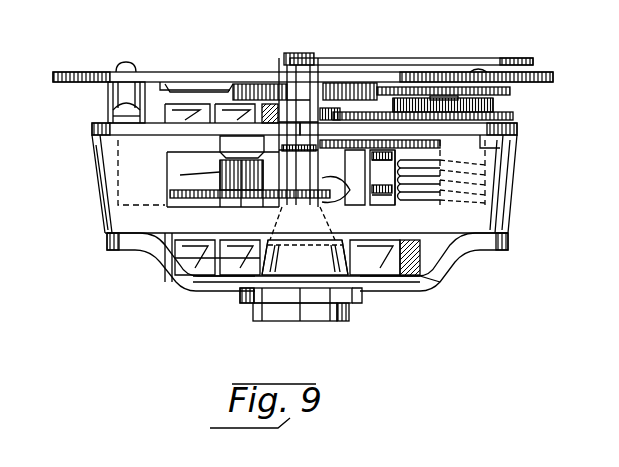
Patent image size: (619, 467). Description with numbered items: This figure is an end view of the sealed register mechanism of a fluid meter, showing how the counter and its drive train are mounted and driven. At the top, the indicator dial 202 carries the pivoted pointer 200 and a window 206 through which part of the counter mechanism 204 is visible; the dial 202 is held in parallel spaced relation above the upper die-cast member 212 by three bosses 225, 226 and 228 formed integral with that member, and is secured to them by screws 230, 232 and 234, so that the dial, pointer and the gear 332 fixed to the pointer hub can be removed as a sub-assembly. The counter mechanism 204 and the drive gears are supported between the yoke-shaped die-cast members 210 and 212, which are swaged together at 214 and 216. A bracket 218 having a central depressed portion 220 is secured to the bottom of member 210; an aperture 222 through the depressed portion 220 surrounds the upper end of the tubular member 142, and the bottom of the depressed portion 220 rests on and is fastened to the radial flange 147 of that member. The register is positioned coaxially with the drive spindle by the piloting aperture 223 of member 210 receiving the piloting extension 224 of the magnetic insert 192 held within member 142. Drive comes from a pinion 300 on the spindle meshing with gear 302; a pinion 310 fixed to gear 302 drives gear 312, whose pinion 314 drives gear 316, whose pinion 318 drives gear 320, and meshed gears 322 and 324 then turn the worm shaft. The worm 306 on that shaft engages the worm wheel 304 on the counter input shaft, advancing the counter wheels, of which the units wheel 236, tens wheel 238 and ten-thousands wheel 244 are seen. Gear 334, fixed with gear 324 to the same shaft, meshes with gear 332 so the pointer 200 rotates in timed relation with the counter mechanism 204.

The tubular member 142 is at (349, 313).
The flange portion 147 is at (362, 296).
The insert 192 is at (333, 318).
The pointer 200 is at (510, 60).
The indicator dial 202 is at (545, 76).
The counter mechanism 204 is at (388, 240).
The window 206 is at (173, 84).
The die-cast member 210 is at (515, 150).
The die-cast member 212 is at (515, 128).
The swaged joint 214 is at (505, 138).
The swaged joint 216 is at (95, 128).
The bracket 218 is at (466, 255).
The depressed portion 220 is at (232, 296).
The aperture 222 is at (247, 306).
The aperture 223 is at (330, 205).
The piloting extension 224 is at (305, 241).
The boss 225 is at (120, 103).
The boss 226 is at (268, 84).
The boss 228 is at (510, 90).
The screw 230 is at (140, 50).
The screw 232 is at (330, 49).
The screw 234 is at (480, 70).
The counter wheel 236 is at (165, 252).
The counter wheel 238 is at (226, 284).
The counter wheel 244 is at (420, 284).
The pinion 300 is at (282, 207).
The gear 302 is at (225, 204).
The worm wheel 304 is at (425, 262).
The worm 306 is at (422, 205).
The pinion 310 is at (220, 172).
The gear 312 is at (242, 147).
The pinion 314 is at (300, 134).
The gear 316 is at (425, 146).
The pinion 318 is at (352, 90).
The gear 320 is at (513, 112).
The gear 322 is at (513, 118).
The gear 324 is at (445, 97).
The gear 332 is at (222, 66).
The gear 334 is at (408, 98).